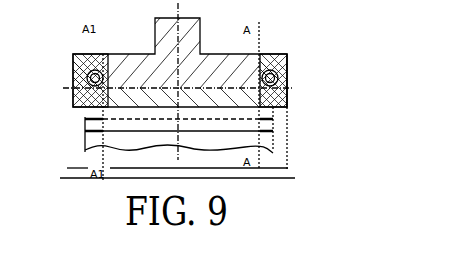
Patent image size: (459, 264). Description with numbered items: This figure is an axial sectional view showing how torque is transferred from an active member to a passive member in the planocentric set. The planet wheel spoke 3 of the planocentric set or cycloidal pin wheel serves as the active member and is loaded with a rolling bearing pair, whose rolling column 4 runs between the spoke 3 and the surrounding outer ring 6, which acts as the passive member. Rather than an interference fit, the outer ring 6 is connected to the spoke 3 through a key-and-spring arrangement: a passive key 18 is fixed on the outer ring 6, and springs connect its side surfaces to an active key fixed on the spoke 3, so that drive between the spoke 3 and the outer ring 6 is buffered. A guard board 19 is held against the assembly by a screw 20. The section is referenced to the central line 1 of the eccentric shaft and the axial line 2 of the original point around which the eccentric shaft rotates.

The central line of eccentric shaft 1 is at (288, 167).
The axial line of original point 2 is at (295, 178).
The planet wheel spoke 3 is at (203, 45).
The rolling column 4 is at (85, 118).
The outer ring 6 is at (126, 57).
The passive key 18 is at (100, 72).
The guard board 19 is at (282, 58).
The screw 20 is at (289, 62).